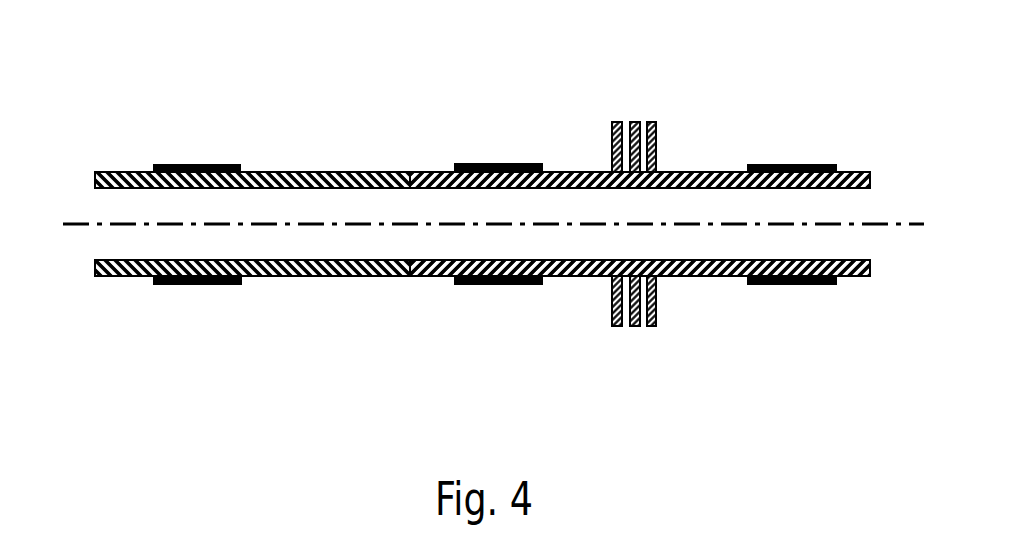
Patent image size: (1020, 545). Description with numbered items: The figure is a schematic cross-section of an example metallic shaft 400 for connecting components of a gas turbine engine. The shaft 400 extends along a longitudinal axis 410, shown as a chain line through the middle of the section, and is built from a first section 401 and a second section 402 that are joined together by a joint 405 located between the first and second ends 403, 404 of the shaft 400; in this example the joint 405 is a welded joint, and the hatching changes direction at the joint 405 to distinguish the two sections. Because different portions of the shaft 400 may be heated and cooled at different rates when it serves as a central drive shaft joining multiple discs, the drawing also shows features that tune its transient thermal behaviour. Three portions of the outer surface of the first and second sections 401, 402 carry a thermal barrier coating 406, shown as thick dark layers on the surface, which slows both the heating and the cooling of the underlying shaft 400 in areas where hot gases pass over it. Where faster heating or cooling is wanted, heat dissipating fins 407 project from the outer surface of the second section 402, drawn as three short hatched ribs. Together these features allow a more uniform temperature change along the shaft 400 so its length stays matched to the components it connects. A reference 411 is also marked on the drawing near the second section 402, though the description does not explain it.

The electrochemical sensor / assembly 400 is at (487, 208).
The first section 401 is at (413, 323).
The second section 402 is at (870, 323).
The first end 403 is at (96, 178).
The second end 404 is at (870, 173).
The interface between sections 405 is at (410, 172).
The electrodes 406 is at (197, 163).
The contact tabs / pins 407 is at (655, 122).
The central axis 410 is at (312, 223).
The substrate portion 411 is at (489, 212).